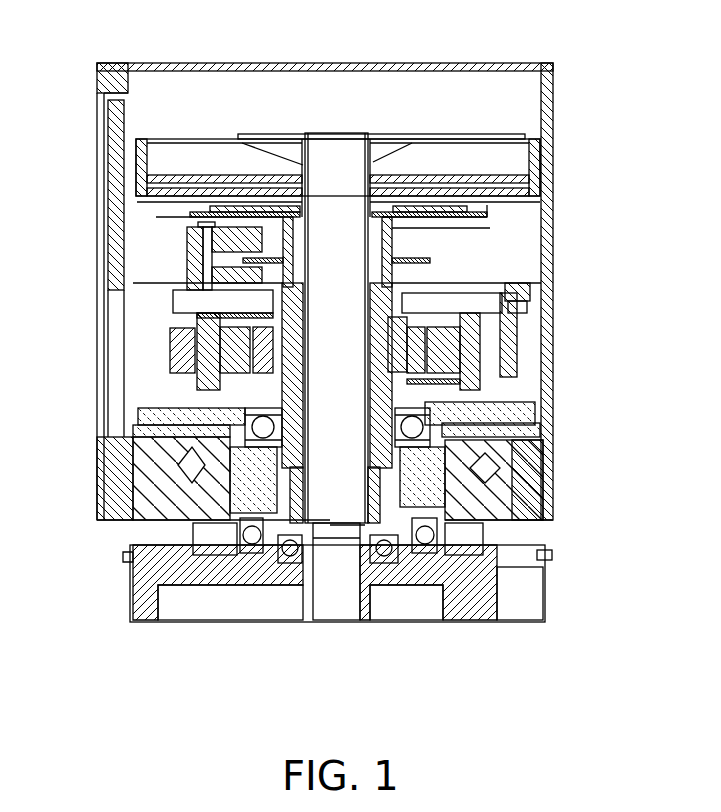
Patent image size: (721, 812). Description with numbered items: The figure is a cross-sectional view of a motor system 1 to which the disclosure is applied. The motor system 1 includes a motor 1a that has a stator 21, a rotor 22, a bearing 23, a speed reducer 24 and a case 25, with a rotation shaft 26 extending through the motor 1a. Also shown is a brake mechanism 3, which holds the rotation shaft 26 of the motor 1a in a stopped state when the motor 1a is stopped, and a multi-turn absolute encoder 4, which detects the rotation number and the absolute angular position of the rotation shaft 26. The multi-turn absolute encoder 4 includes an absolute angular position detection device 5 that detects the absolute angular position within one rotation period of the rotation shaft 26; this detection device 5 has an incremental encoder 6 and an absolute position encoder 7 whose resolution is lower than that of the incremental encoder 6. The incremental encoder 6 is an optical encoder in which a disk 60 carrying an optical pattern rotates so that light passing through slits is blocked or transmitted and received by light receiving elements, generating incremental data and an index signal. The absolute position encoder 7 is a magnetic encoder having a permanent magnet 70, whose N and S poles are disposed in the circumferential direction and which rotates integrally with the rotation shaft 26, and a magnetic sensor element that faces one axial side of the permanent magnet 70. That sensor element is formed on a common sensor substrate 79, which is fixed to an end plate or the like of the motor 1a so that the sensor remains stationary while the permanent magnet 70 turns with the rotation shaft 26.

The motor system 1 is at (616, 116).
The motor 1a is at (555, 288).
The brake mechanism 3 is at (460, 235).
The multi-turn absolute encoder 4 is at (140, 233).
The absolute angular position detection device 5 is at (337, 298).
The incremental encoder 6 is at (210, 255).
The absolute position encoder 7 is at (447, 197).
The sensor substrate 79 is at (413, 190).
The permanent magnet 70 is at (470, 207).
The disk 60 is at (420, 253).
The stator 21 is at (473, 348).
The rotor 22 is at (422, 357).
The case 25 is at (548, 428).
The speed reducer 24 is at (451, 491).
The bearing 23 is at (393, 557).
The rotation shaft 26 is at (505, 296).